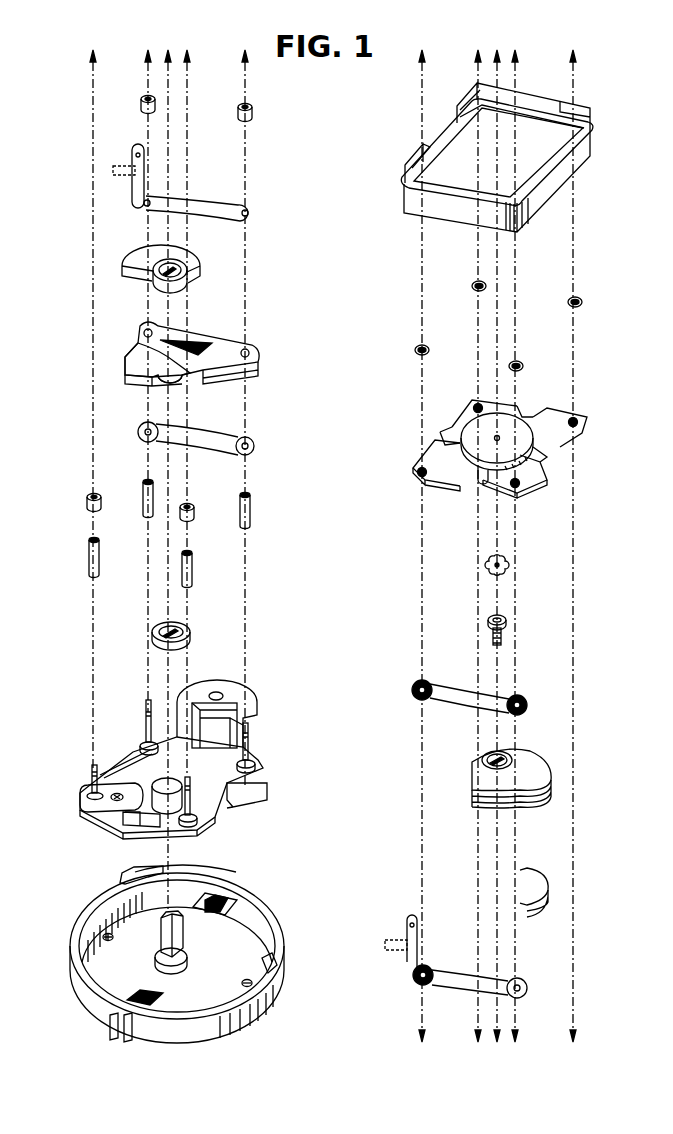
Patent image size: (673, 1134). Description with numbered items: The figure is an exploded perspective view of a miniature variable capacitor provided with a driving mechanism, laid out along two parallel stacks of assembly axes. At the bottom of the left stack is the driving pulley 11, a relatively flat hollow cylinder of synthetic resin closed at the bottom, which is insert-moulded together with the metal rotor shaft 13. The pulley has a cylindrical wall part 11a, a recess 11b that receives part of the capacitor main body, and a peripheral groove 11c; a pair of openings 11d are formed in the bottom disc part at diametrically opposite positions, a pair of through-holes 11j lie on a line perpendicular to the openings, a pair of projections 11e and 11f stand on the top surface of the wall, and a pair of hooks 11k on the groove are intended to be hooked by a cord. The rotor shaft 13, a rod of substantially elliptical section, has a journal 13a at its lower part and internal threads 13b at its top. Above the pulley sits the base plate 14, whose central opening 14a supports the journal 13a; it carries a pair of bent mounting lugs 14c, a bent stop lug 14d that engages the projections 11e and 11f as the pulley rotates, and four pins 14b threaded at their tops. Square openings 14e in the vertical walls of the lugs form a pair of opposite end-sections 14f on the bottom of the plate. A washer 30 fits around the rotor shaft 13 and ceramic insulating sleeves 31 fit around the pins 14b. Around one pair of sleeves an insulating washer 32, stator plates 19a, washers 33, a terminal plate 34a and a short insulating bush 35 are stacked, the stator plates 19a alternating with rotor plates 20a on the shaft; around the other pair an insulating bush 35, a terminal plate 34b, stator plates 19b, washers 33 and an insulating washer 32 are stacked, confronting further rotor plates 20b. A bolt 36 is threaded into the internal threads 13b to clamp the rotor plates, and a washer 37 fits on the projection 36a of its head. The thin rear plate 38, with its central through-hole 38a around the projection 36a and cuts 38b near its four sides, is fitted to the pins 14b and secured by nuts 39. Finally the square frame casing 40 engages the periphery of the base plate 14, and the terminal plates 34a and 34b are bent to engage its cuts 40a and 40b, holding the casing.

The driving pulley 11 is at (185, 963).
The cylindrical wall part 11a is at (275, 918).
The recess 11b is at (190, 887).
The peripheral groove 11c is at (272, 1018).
The openings 11d is at (240, 904).
The projection 11e is at (284, 973).
The projection 11f is at (134, 868).
The through-holes 11j is at (102, 937).
The hooks 11k is at (230, 895).
The rotor shaft 13 is at (180, 947).
The journal 13a is at (182, 961).
The internal threads 13b is at (183, 933).
The base plate 14 is at (176, 757).
The opening 14a is at (142, 785).
The pins 14b is at (128, 743).
The mounting lugs 14c is at (238, 694).
The stop lug 14d is at (266, 788).
The square openings 14e is at (203, 698).
The opposite end-sections 14f is at (230, 735).
The stator plates 19a is at (138, 350).
The stator plates 19b is at (536, 873).
The rotor plates 20a is at (134, 252).
The rotor plates 20b is at (528, 765).
The washer 30 is at (190, 632).
The insulating sleeves 31 is at (142, 485).
The insulating washer 32 is at (220, 437).
The washers 33 is at (218, 340).
The terminal plate 34a is at (215, 200).
The terminal plate 34b is at (452, 996).
The insulating bush 35 is at (140, 101).
The bolt 36 is at (493, 613).
The projection 36a is at (495, 612).
The washer 37 is at (508, 565).
The rear plate 38 is at (496, 446).
The through-hole 38a is at (495, 436).
The cuts 38b is at (444, 435).
The nuts 39 is at (472, 284).
The casing 40 is at (496, 149).
The cut 40a is at (464, 117).
The cut 40b is at (412, 166).